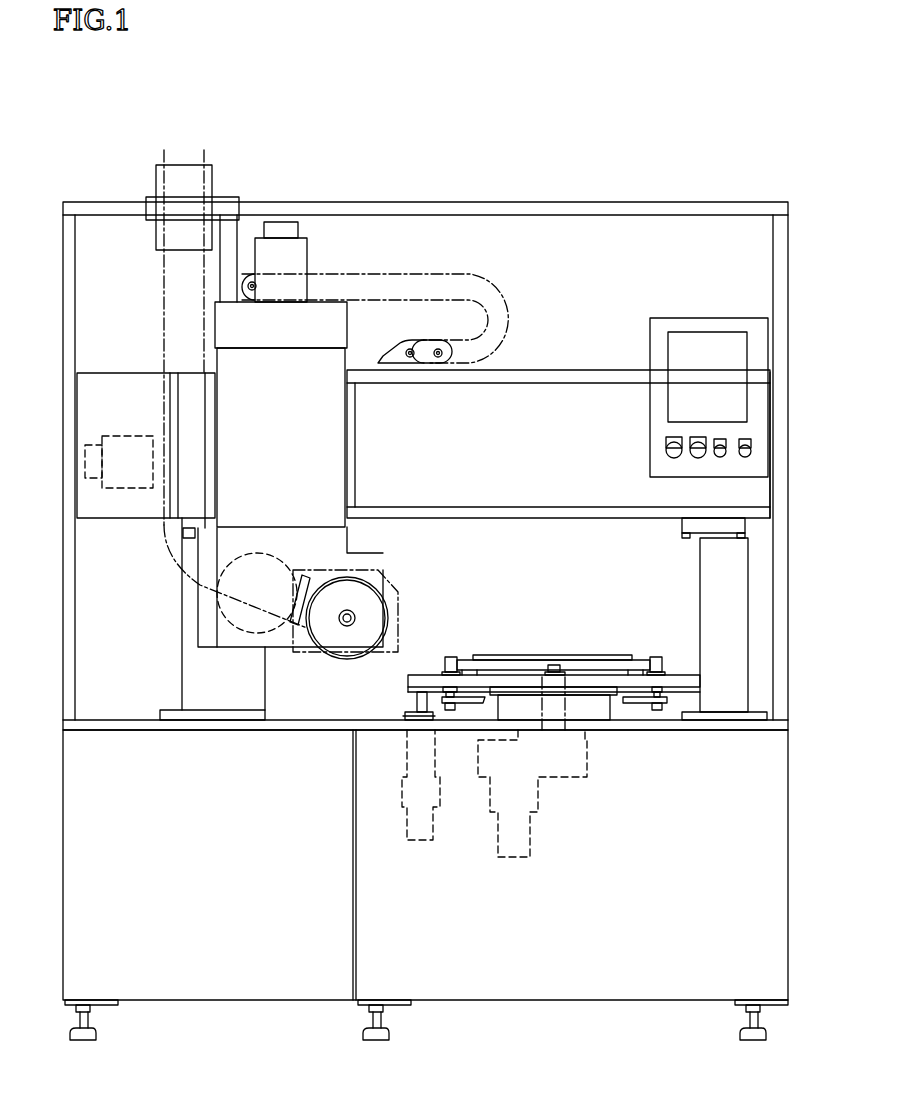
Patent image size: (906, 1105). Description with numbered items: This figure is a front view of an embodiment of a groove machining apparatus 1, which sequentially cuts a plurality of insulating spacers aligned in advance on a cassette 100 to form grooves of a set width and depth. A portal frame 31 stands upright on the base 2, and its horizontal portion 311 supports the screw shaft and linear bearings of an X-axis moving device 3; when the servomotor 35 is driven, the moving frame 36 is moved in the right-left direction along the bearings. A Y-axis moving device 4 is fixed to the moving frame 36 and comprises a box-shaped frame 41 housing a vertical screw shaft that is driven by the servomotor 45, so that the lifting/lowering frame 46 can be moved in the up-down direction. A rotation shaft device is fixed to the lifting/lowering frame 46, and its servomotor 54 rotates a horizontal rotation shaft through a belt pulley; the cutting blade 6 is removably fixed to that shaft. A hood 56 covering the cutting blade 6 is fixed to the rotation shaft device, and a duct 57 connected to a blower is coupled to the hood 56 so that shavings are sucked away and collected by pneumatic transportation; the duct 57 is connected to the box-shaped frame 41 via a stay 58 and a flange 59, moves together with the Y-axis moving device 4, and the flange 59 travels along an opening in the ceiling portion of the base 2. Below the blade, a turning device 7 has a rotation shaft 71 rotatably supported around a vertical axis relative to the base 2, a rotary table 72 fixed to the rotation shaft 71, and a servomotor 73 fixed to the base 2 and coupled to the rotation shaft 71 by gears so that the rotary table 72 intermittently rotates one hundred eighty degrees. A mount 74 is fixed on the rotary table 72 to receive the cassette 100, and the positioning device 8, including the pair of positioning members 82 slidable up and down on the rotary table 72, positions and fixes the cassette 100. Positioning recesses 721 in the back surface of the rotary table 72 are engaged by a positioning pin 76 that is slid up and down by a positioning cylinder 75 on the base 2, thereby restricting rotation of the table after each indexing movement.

The groove machining apparatus 1 is at (45, 107).
The base 2 is at (58, 840).
The X-axis moving device 3 is at (107, 357).
The Y-axis moving device 4 is at (309, 335).
The cutting blade 6 is at (387, 619).
The turning device 7 is at (564, 730).
The positioning device 8 is at (467, 705).
The portal frame 31 is at (597, 368).
The servomotor 35 is at (110, 436).
The moving frame 36 is at (358, 430).
The box-shaped frame 41 is at (222, 327).
The servomotor 45 is at (280, 222).
The lifting/lowering frame 46 is at (312, 482).
The servomotor 54 is at (247, 628).
The hood 56 is at (400, 597).
The duct 57 is at (163, 535).
The stay 58 is at (232, 237).
The flange 59 is at (156, 182).
The rotation shaft 71 is at (565, 707).
The rotary table 72 is at (700, 678).
The servomotor 73 is at (528, 837).
The mount 74 is at (510, 668).
The positioning cylinder 75 is at (418, 840).
The positioning pin 76 is at (405, 700).
The positioning member 82 is at (452, 655).
The cassette 100 is at (638, 653).
The horizontal portion 311 is at (543, 395).
The positioning recess 721 is at (408, 692).